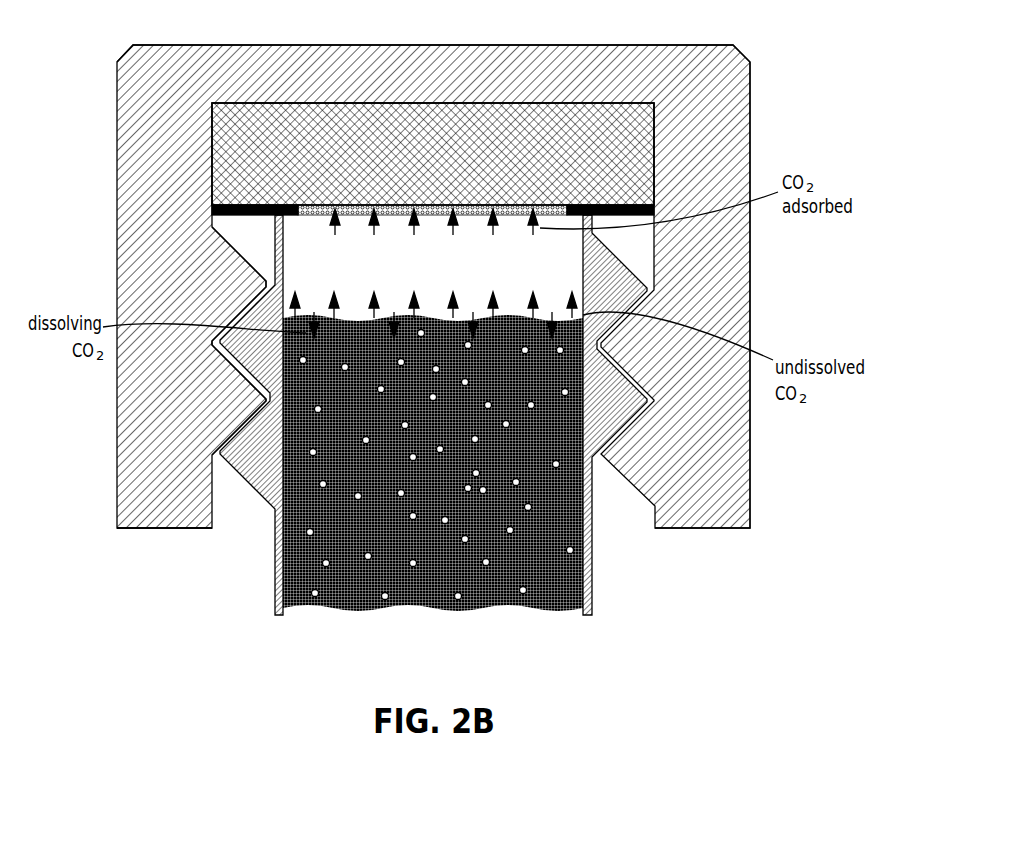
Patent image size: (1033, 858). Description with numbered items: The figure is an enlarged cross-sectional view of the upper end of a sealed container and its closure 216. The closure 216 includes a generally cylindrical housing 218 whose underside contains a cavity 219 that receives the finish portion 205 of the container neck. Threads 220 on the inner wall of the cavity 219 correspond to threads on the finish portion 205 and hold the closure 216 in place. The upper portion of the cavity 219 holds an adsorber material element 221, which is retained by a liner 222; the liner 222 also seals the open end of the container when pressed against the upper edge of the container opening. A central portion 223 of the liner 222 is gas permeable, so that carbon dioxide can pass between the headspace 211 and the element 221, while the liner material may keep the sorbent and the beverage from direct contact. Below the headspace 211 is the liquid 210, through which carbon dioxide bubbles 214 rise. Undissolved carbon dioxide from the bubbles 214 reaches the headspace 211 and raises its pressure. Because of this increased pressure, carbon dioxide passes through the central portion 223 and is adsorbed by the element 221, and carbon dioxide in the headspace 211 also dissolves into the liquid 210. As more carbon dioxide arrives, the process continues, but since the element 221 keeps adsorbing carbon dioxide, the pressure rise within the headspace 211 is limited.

The finish portion 205 is at (594, 544).
The liquid 210 is at (552, 579).
The headspace 211 is at (563, 257).
The CO2 bubbles 214 is at (305, 546).
The closure 216 is at (183, 45).
The housing 218 is at (117, 477).
The cavity 219 is at (235, 516).
The threads 220 is at (245, 258).
The adsorber material element 221 is at (212, 155).
The liner 222 is at (212, 212).
The central portion 223 is at (308, 218).